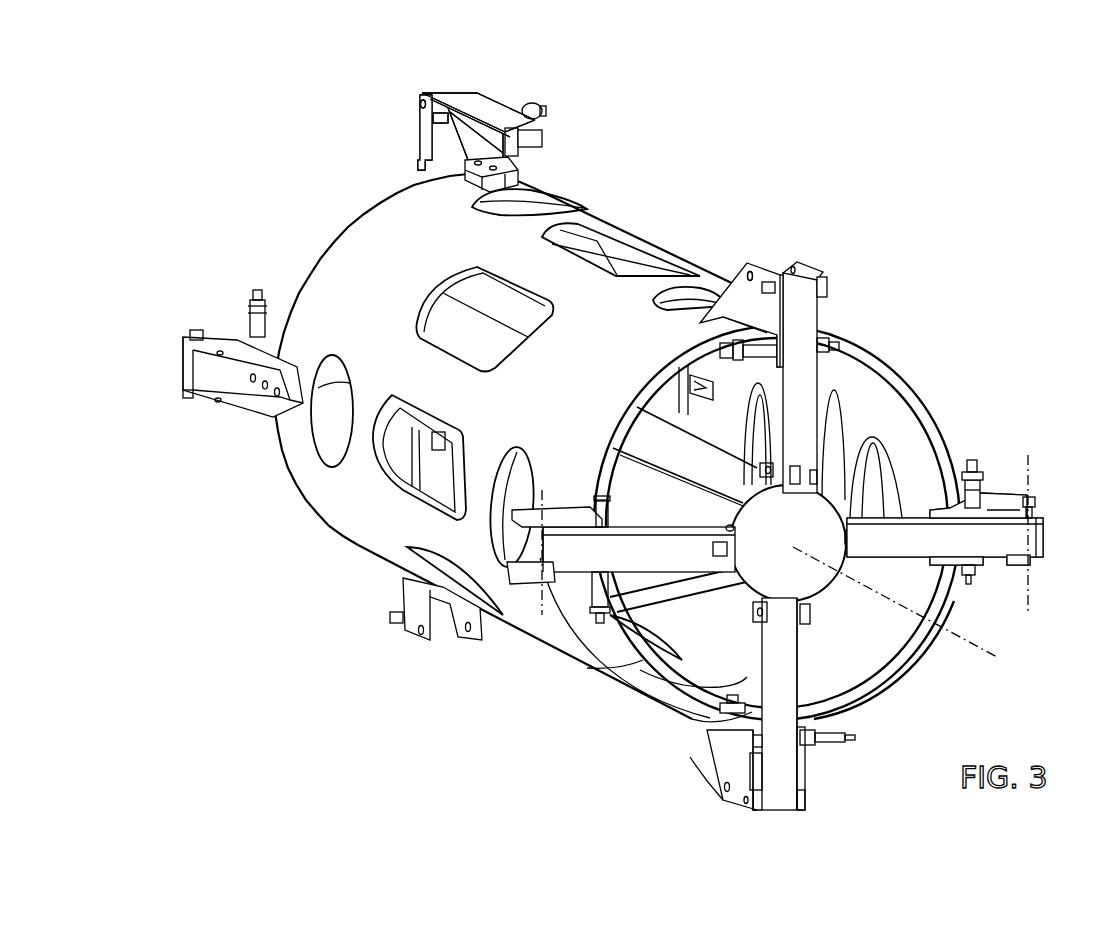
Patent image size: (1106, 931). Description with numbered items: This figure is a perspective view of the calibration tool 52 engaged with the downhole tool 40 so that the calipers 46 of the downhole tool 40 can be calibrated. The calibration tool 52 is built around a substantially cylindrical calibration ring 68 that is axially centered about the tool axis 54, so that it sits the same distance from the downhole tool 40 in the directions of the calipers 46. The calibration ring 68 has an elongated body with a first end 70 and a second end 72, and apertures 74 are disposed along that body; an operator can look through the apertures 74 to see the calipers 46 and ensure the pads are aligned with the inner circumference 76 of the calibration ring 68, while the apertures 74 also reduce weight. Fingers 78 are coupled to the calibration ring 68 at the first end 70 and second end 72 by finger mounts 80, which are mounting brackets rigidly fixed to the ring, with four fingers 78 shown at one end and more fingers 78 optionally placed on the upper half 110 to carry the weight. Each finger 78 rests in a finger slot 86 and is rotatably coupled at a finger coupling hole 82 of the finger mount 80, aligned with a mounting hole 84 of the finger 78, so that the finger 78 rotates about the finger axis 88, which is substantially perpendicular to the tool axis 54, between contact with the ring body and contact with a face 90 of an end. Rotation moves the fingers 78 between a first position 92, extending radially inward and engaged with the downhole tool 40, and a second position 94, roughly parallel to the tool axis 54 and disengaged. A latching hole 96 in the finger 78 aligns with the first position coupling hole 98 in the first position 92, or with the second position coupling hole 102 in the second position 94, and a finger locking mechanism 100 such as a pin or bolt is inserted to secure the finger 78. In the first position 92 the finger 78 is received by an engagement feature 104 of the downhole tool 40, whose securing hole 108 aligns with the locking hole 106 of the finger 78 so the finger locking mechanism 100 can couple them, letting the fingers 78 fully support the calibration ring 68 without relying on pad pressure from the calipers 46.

The downhole tool 40 is at (850, 477).
The calipers 46 is at (660, 460).
The calibration tool 52 is at (614, 450).
The tool axis 54 is at (1000, 657).
The calibration ring 68 is at (785, 523).
The first end 70 is at (660, 713).
The second end 72 is at (318, 237).
The apertures 74 is at (400, 490).
The inner circumference 76 is at (904, 412).
The fingers 78 is at (543, 133).
The finger mounts 80 is at (417, 110).
The finger coupling hole 82 is at (193, 332).
The mounting hole 84 is at (753, 813).
The finger slot 86 is at (800, 773).
The finger axis 88 is at (1030, 580).
The face 90 is at (907, 657).
The first position 92 is at (708, 475).
The second position 94 is at (581, 167).
The latching hole 96 is at (973, 500).
The first position coupling hole 98 is at (417, 166).
The finger locking mechanism 100 is at (969, 584).
The second position coupling hole 102 is at (455, 148).
The engagement feature 104 is at (810, 610).
The locking hole 106 is at (497, 137).
The securing hole 108 is at (762, 465).
The upper half 110 is at (633, 522).